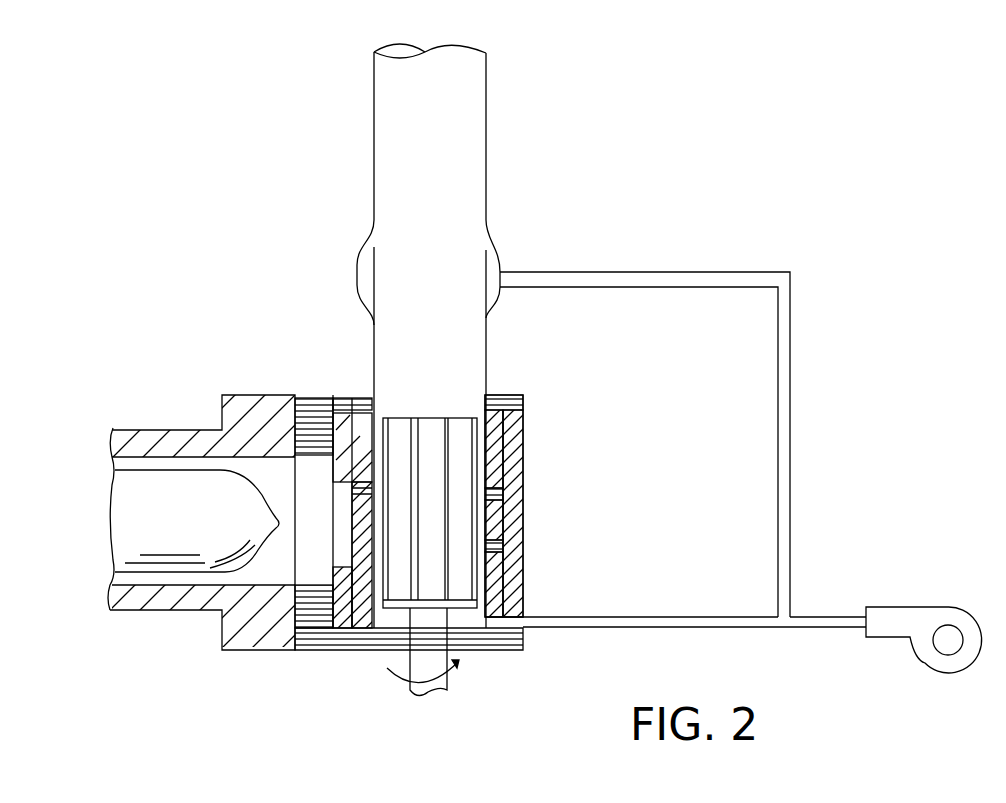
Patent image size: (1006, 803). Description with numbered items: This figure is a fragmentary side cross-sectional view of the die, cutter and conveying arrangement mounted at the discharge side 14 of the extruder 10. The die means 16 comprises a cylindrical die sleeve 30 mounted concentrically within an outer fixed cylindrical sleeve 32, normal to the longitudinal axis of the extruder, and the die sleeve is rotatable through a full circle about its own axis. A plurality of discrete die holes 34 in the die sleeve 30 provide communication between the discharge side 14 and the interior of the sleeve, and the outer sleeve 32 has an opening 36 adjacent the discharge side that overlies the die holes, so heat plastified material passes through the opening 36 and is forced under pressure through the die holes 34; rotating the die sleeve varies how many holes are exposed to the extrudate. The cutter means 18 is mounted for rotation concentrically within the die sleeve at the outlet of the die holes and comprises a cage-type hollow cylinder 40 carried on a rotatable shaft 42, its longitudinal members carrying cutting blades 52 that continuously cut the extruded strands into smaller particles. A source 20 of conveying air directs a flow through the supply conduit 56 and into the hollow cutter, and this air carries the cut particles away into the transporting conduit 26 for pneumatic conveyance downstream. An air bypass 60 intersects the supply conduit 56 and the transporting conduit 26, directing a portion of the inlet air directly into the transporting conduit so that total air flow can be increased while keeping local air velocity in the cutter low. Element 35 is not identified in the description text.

The extruder 10 is at (113, 428).
The discharge side 14 is at (243, 418).
The die means 16 is at (523, 495).
The cutter means 18 is at (434, 432).
The source of conveying fluid 20 is at (921, 625).
The transporting conduit 26 is at (473, 157).
The die sleeve 30 is at (360, 430).
The outer fixed cylindrical sleeve 32 is at (330, 447).
The die holes 34 is at (352, 487).
The seal 35 is at (512, 548).
The opening 36 is at (323, 490).
The cage-type hollow cylinder 40 is at (490, 420).
The rotatable shaft 42 is at (445, 672).
The cutting blade 52 is at (432, 517).
The supply conduit 56 is at (688, 617).
The air bypass 60 is at (793, 392).